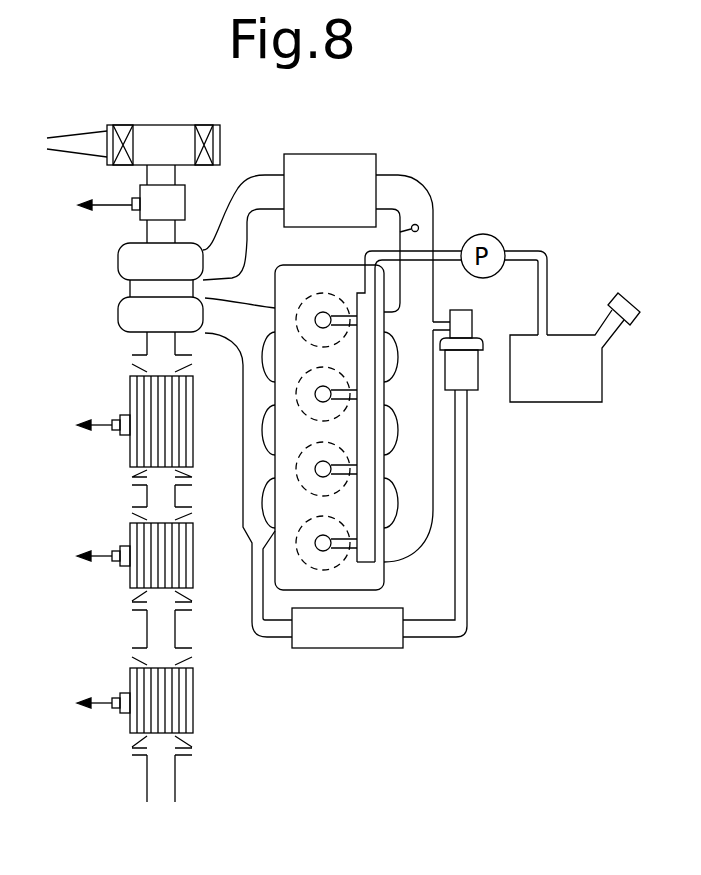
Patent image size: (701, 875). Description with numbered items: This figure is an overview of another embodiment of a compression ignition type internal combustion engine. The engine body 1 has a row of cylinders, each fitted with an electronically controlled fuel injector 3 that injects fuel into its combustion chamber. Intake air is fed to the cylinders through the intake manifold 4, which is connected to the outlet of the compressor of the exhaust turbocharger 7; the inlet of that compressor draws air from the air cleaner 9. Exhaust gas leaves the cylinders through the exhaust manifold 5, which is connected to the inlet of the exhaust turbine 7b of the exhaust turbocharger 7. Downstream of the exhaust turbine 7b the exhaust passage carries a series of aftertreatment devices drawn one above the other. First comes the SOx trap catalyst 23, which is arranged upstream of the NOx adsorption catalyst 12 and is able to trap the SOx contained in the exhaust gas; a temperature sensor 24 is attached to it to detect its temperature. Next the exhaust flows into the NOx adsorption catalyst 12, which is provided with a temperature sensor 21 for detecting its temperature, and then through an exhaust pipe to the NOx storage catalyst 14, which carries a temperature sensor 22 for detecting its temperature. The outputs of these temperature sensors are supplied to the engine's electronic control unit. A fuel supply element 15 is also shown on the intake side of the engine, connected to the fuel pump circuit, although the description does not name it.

The engine body 1 is at (394, 596).
The electronically controlled fuel injector 3 is at (323, 318).
The intake manifold 4 is at (415, 522).
The exhaust manifold 5 is at (247, 511).
The exhaust turbocharger 7 is at (102, 290).
The exhaust turbine 7b is at (127, 313).
The air cleaner 9 is at (418, 225).
The NOx adsorption catalyst 12 is at (140, 540).
The NOx storage catalyst 14 is at (138, 719).
The fuel addition valve 15 is at (467, 472).
The temperature sensor 21 is at (118, 565).
The temperature sensor 22 is at (120, 694).
The SOx trap catalyst 23 is at (140, 395).
The temperature sensor 24 is at (118, 433).